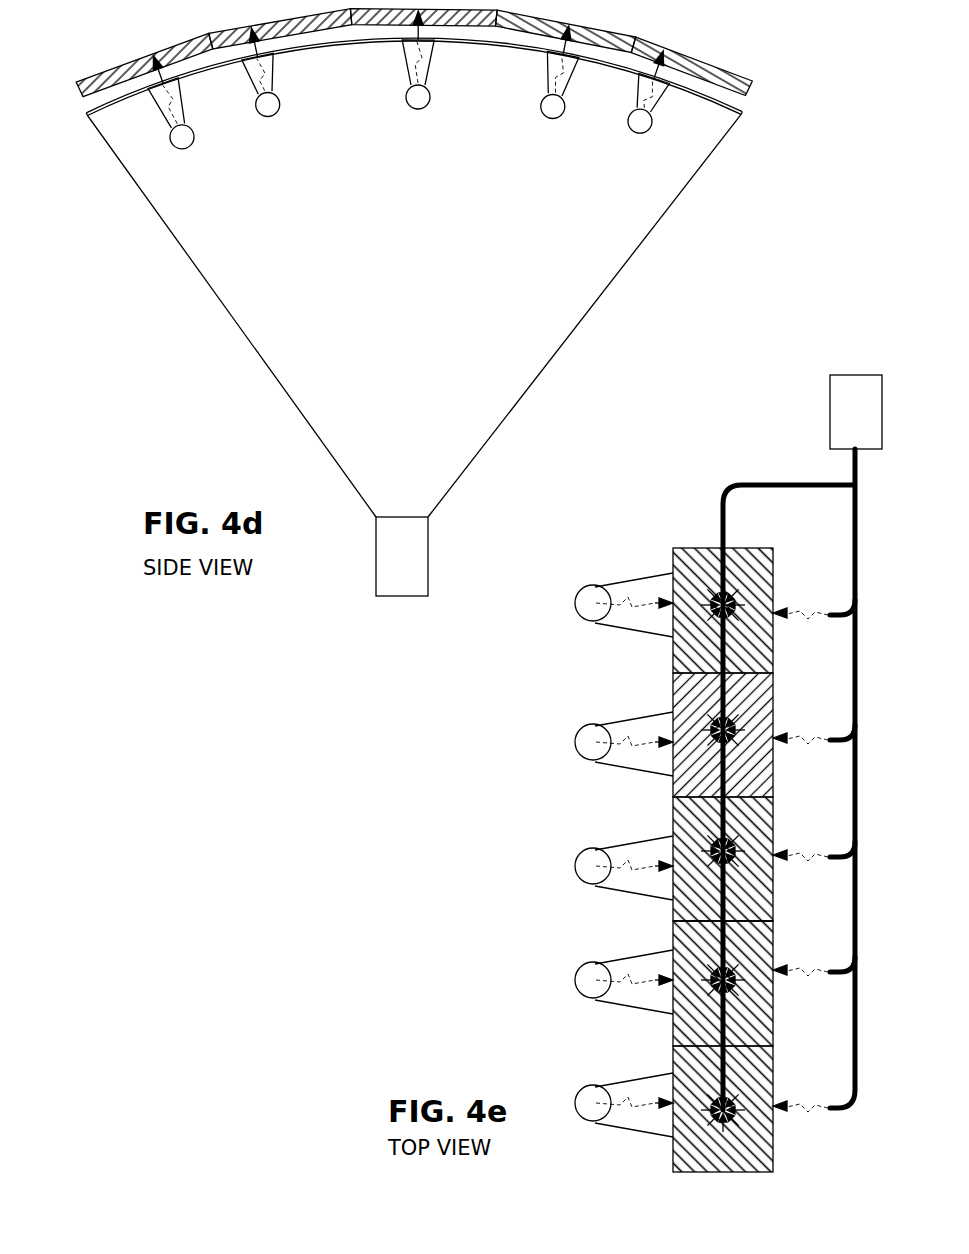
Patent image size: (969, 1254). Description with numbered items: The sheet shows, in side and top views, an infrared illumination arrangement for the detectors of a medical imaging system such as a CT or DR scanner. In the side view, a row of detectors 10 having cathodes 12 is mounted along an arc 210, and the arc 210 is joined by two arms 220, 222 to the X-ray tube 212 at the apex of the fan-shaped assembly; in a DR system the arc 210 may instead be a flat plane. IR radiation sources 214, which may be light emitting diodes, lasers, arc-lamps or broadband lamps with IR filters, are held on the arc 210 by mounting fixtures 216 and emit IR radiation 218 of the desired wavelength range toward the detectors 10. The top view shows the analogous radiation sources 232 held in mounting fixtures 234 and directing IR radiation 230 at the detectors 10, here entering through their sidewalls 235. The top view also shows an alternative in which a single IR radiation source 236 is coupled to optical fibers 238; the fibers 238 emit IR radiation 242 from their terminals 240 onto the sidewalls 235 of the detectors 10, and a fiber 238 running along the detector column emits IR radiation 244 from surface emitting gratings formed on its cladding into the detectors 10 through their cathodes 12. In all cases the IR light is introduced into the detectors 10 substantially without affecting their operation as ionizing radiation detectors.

In FIG. 4D, the detector 10 is at (74, 90).
In FIG. 4E, the detector 10 is at (670, 568).
In FIG. 4D, the cathode 12 is at (748, 97).
In FIG. 4E, the cathode 12 is at (716, 547).
In FIG. 4D, the arc 210 is at (746, 104).
In FIG. 4D, the X-ray tube 212 is at (405, 597).
In FIG. 4D, the IR radiation source 214 is at (431, 100).
In FIG. 4D, the mounting fixture 216 is at (440, 45).
In FIG. 4D, the IR radiation 218 is at (284, 68).
In FIG. 4D, the arm 220 is at (652, 238).
In FIG. 4D, the arm 222 is at (172, 231).
In FIG. 4E, the IR radiation 230 is at (622, 622).
In FIG. 4E, the radiation source 232 is at (592, 760).
In FIG. 4E, the mounting fixture 234 is at (637, 775).
In FIG. 4E, the sidewall 235 is at (672, 913).
In FIG. 4E, the IR radiation source 236 is at (852, 440).
In FIG. 4E, the optical fiber 238 is at (852, 552).
In FIG. 4E, the terminal 240 is at (835, 742).
In FIG. 4E, the IR radiation 242 is at (800, 858).
In FIG. 4E, the IR radiation 244 is at (703, 1003).